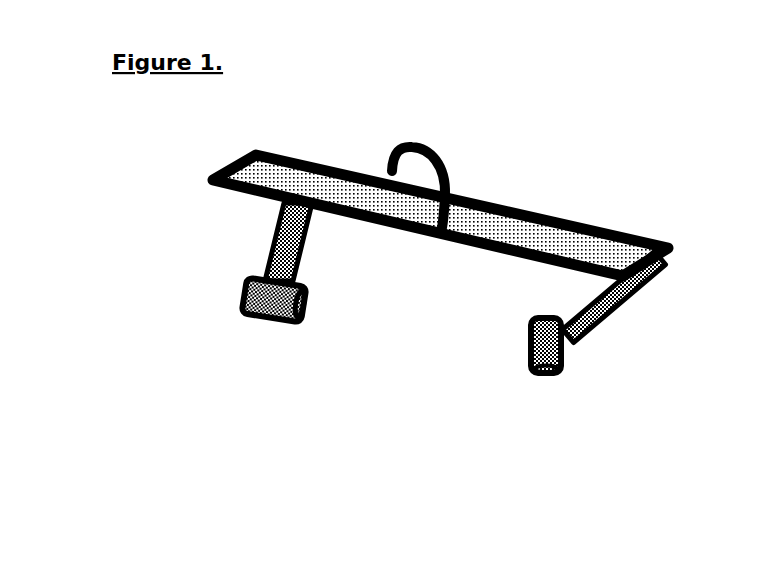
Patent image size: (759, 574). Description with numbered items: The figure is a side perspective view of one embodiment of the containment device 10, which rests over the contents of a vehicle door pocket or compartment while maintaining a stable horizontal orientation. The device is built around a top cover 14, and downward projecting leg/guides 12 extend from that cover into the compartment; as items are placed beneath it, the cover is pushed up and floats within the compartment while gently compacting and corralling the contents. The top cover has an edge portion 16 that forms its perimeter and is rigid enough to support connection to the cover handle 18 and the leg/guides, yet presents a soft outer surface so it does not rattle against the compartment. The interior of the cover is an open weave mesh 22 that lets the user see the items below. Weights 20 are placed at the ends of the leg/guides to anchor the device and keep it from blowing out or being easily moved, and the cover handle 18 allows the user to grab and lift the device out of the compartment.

The containment device 10 is at (203, 162).
The leg/guides 12 is at (260, 235).
The top cover 14 is at (300, 130).
The edge portion 16 is at (560, 208).
The cover handle 18 is at (447, 149).
The weights 20 is at (329, 329).
The mesh 22 is at (540, 231).